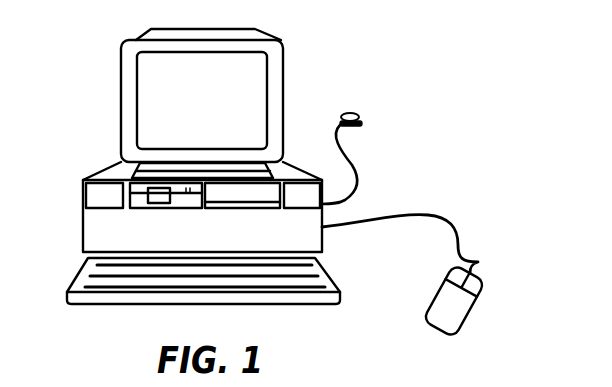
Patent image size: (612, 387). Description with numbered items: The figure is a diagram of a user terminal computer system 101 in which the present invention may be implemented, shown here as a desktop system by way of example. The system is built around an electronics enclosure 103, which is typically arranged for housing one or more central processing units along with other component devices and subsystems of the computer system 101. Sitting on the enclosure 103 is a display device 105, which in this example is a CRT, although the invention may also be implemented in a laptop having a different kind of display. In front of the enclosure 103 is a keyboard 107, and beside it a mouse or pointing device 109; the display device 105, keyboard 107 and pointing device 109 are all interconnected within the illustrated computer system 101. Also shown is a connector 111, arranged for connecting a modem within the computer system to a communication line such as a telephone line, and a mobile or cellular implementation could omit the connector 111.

The computer system 101 is at (445, 169).
The electronics enclosure 103 is at (97, 218).
The display device 105 is at (120, 110).
The keyboard 107 is at (75, 274).
The mouse or pointing device 109 is at (483, 302).
The connector 111 is at (352, 112).